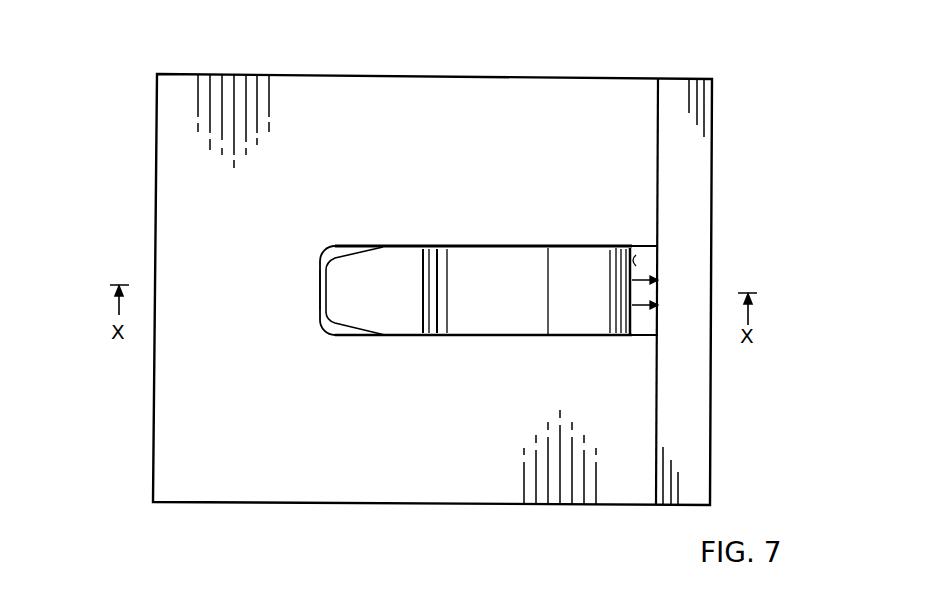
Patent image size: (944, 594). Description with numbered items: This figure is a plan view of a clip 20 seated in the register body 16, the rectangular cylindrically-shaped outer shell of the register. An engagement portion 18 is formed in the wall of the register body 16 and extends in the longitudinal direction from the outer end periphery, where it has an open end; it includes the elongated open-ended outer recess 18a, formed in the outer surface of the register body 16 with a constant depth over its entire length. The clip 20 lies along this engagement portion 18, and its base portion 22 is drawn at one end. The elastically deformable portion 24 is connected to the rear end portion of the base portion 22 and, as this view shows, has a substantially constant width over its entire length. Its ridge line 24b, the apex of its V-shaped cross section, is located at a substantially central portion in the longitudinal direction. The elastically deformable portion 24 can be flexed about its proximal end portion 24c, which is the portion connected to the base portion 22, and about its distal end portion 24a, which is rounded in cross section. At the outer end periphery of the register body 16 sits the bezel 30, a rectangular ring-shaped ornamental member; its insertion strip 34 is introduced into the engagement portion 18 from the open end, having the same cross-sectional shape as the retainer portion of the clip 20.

The register body 16 is at (407, 88).
The engagement portion 18 is at (325, 336).
The outer recess 18a is at (652, 252).
The clip 20 is at (490, 241).
The base portion 22 is at (375, 262).
The elastically deformable portion 24 is at (581, 312).
The distal end portion 24a is at (645, 264).
The ridge line 24b is at (543, 289).
The proximal end portion 24c is at (420, 278).
The bezel 30 is at (693, 175).
The insertion strip 34 is at (641, 296).